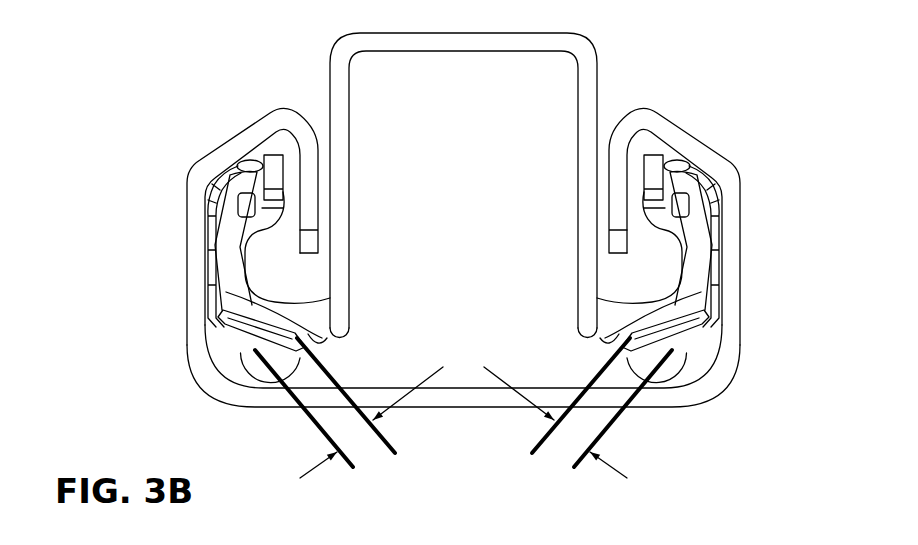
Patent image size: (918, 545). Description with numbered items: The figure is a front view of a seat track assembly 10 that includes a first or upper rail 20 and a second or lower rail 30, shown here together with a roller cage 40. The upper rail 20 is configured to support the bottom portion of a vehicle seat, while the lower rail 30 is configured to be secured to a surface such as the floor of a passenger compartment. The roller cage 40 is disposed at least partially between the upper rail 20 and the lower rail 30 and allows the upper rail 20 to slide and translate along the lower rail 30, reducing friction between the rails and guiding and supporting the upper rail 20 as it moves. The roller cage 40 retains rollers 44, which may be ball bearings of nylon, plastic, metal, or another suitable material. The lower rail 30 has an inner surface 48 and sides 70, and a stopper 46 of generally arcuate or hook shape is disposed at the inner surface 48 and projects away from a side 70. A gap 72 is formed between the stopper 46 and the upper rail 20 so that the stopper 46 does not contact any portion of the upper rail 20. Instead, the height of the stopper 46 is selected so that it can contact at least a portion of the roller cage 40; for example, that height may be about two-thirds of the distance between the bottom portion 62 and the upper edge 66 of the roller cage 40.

The seat track assembly 10 is at (461, 245).
The upper rail 20 is at (427, 185).
The lower rail 30 is at (448, 226).
The roller cage 40 is at (459, 347).
The roller 44 is at (461, 235).
The stopper 46 is at (467, 400).
The inner surface 48 is at (455, 250).
The bottom portion 62 is at (463, 392).
The upper edge 66 is at (320, 337).
The side 70 is at (461, 252).
The gap 72 is at (433, 379).